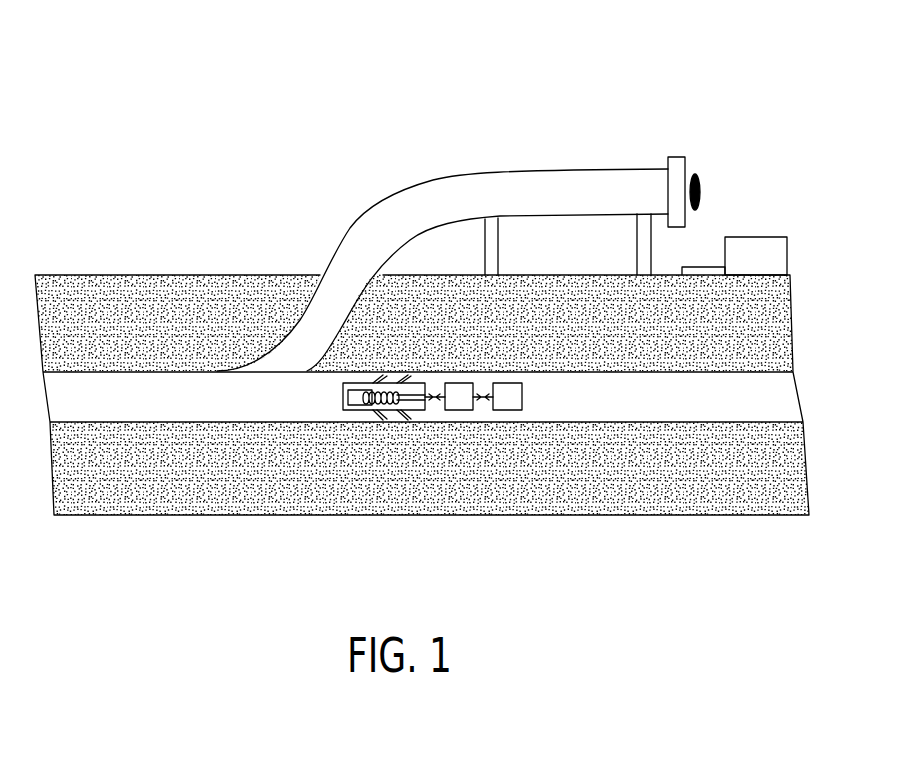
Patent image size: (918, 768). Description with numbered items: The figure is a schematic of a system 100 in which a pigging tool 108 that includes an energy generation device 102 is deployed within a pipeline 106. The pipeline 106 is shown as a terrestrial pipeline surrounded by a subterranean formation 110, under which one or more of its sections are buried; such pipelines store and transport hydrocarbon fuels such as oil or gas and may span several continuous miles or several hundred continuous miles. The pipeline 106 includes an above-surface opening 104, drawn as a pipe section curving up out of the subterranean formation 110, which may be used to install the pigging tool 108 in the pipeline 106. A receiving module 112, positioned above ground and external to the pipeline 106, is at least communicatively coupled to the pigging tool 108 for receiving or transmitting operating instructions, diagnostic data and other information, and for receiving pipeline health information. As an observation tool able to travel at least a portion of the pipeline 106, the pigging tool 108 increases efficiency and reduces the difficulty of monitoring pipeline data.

The pipeline inspection system 100 is at (115, 105).
The energy generation device 102 is at (377, 410).
The above-surface opening 104 is at (697, 162).
The pipeline 106 is at (138, 400).
The pigging tool 108 is at (327, 398).
The subterranean formation 110 is at (123, 493).
The receiving module 112 is at (753, 235).